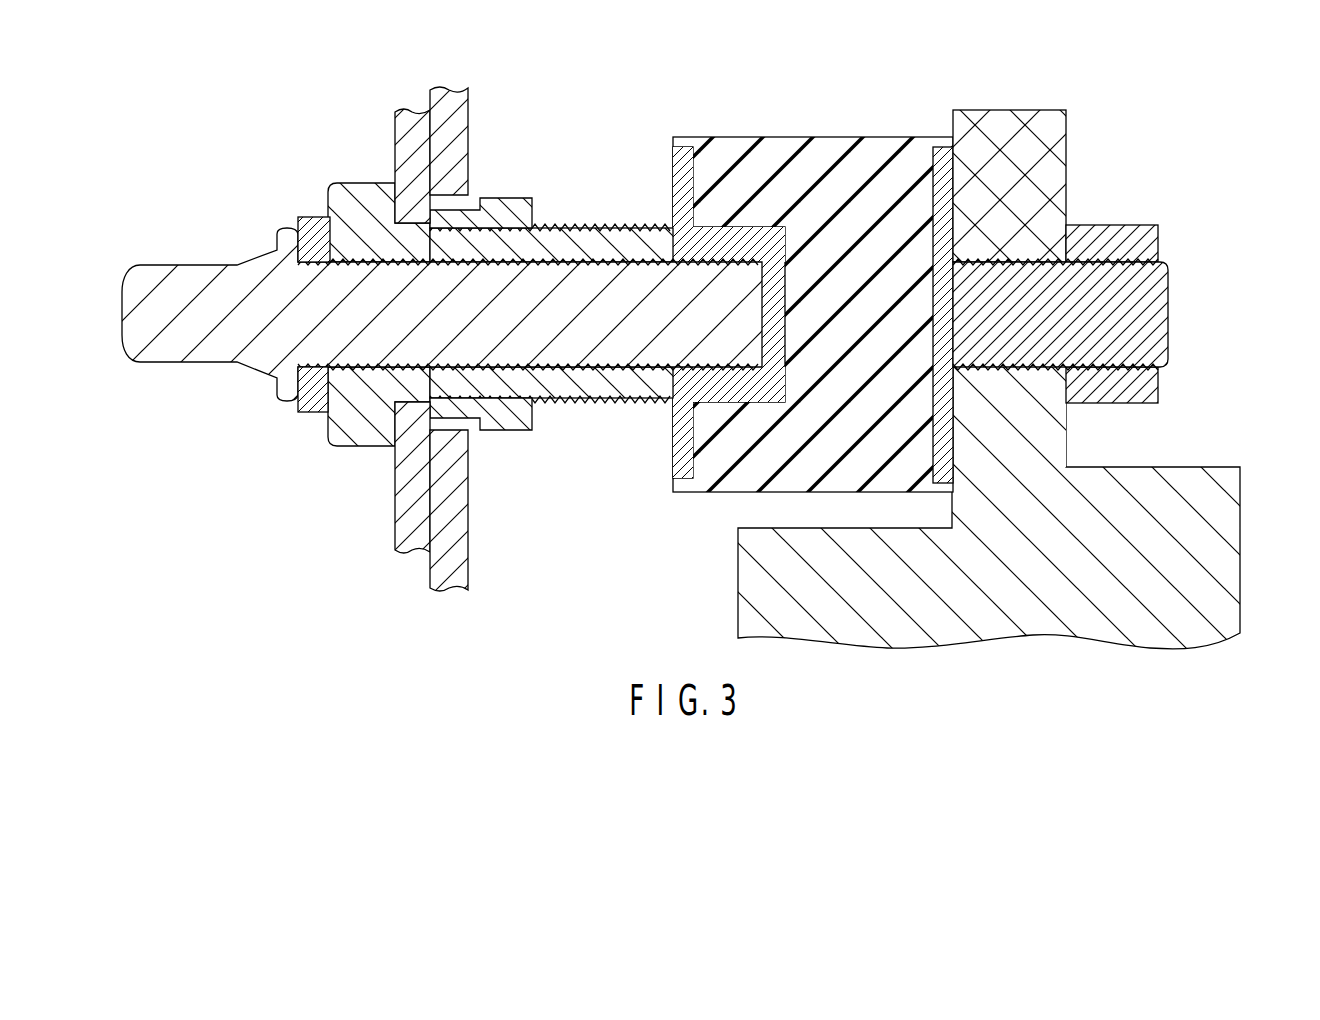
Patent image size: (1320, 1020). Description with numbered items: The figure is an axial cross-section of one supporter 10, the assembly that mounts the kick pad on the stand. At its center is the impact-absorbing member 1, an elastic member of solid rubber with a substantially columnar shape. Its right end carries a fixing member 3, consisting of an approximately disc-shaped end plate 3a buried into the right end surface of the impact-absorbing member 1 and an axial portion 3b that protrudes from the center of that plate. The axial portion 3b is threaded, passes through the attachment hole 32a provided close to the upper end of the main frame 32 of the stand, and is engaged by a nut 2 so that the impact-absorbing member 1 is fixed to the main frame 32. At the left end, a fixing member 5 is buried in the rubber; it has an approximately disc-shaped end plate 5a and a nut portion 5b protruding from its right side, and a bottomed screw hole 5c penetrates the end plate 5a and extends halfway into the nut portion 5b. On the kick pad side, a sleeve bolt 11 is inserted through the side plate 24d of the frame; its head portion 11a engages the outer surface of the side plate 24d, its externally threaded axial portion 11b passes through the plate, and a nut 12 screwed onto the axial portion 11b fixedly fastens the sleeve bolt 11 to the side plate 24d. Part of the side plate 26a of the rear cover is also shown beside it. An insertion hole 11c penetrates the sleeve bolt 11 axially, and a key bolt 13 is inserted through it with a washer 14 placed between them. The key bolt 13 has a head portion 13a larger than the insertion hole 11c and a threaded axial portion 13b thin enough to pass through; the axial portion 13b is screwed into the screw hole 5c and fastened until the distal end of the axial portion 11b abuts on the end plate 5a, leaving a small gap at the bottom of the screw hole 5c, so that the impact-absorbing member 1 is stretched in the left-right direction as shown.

The impact-absorbing member 1 is at (873, 150).
The nut 2 is at (1128, 223).
The fixing member 3 is at (999, 256).
The end plate 3a is at (953, 187).
The axial portion 3b is at (1041, 248).
The fixing member 5 is at (690, 312).
The end plate 5a is at (673, 172).
The nut portion 5b is at (713, 224).
The screw hole 5c is at (675, 358).
The supporter 10 is at (703, 339).
The sleeve bolt 11 is at (471, 294).
The head portion 11a is at (358, 195).
The axial portion 11b is at (555, 240).
The insertion hole 11c is at (560, 366).
The nut 12 is at (510, 200).
The key bolt 13 is at (442, 348).
The head portion 13a is at (293, 228).
The axial portion 13b is at (367, 352).
The washer 14 is at (300, 413).
The side plate 24d is at (395, 512).
The side plate 26a is at (470, 567).
The main frame 32 is at (1011, 508).
The attachment hole 32a is at (1030, 372).